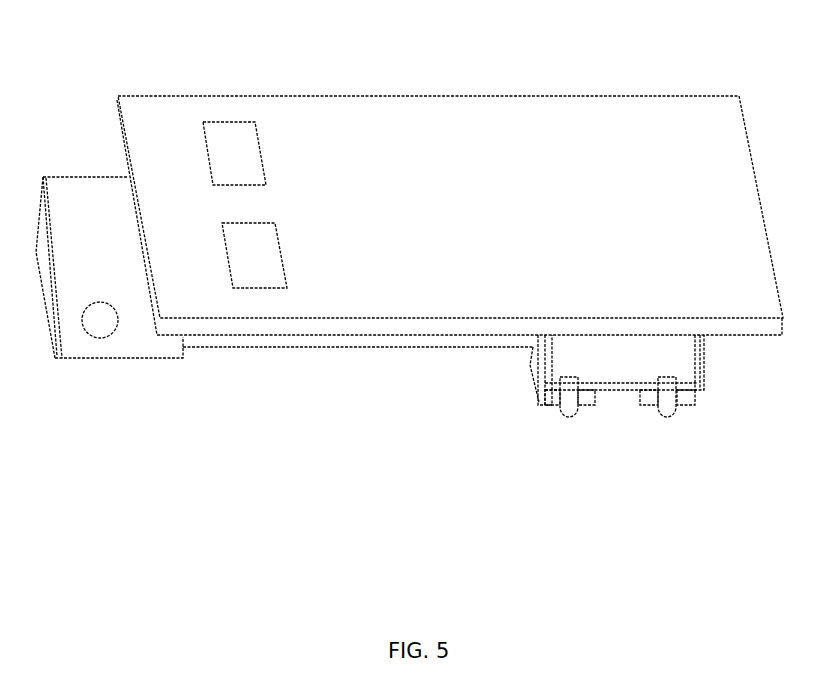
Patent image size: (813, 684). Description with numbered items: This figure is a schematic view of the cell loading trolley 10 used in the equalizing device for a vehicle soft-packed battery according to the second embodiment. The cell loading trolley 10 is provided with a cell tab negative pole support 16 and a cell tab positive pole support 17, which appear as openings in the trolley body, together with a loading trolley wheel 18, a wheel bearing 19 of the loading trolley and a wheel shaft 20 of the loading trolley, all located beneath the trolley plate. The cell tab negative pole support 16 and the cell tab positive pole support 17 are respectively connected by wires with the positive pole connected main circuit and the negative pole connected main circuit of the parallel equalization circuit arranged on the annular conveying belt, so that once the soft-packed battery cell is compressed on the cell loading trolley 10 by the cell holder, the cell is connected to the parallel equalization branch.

The cell loading trolley 10 is at (402, 127).
The cell tab negative pole support 16 is at (237, 148).
The cell tab positive pole support 17 is at (257, 257).
The loading trolley wheel 18 is at (563, 418).
The wheel bearing 19 is at (638, 392).
The wheel shaft 20 is at (615, 493).